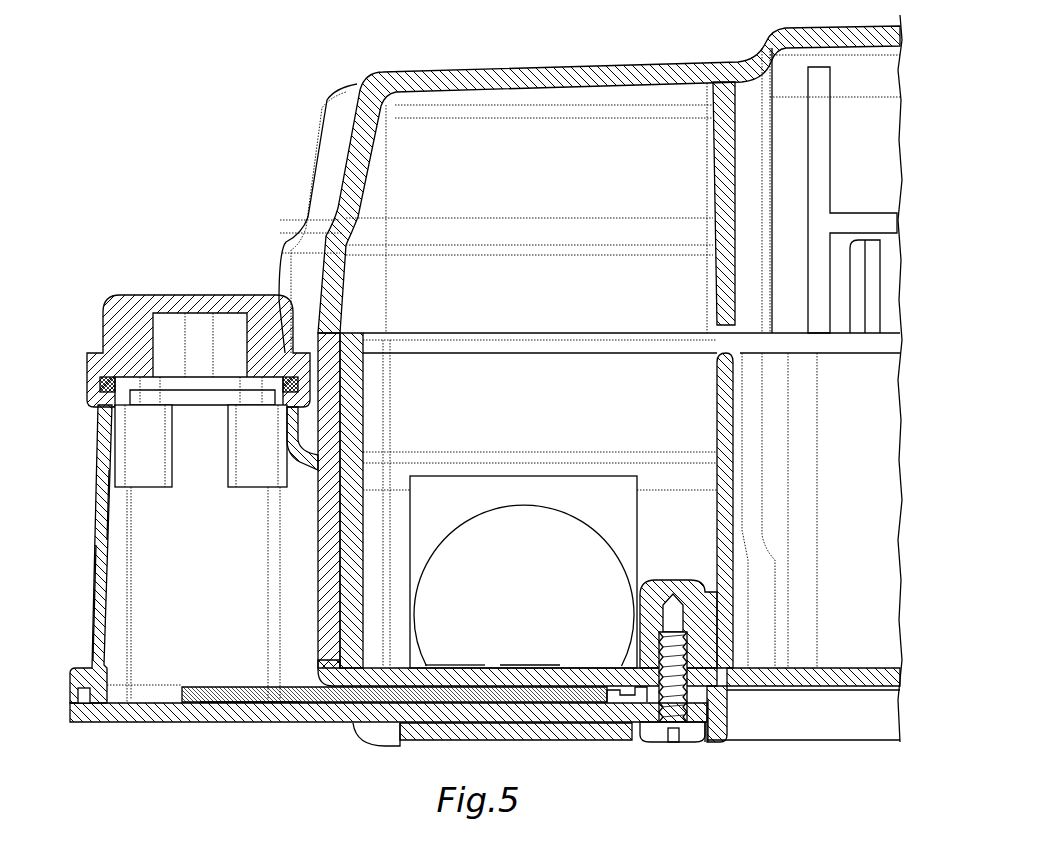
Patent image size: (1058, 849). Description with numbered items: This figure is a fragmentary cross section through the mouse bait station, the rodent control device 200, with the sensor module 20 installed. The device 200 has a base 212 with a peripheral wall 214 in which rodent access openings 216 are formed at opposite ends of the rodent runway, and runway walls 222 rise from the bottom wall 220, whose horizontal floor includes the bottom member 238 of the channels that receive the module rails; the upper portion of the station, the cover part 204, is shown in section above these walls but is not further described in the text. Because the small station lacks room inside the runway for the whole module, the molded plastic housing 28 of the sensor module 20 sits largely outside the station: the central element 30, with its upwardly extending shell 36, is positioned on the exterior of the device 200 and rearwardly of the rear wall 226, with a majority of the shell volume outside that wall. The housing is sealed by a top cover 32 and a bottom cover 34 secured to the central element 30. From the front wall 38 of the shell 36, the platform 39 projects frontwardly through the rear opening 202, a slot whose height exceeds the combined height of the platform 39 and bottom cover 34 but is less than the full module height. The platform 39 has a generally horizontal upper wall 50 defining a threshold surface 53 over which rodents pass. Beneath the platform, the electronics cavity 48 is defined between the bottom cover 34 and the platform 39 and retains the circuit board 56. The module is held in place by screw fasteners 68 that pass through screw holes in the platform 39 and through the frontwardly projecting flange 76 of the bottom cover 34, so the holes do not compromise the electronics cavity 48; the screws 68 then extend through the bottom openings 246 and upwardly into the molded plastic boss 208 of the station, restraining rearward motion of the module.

The rodent control device 200 is at (280, 100).
The housing cover 204 is at (389, 70).
The top cover 32 is at (103, 312).
The sensor module 20 is at (98, 460).
The molded plastic housing 28 is at (96, 507).
The central element 30 is at (93, 560).
The shell 36 is at (110, 620).
The front wall 38 is at (318, 530).
The rear wall 226 is at (318, 575).
The circuit board 56 is at (207, 686).
The bottom cover 34 is at (88, 723).
The electronics cavity 48 is at (245, 690).
The base 212 is at (447, 332).
The peripheral wall 214 is at (529, 401).
The rodent access openings 216 is at (498, 512).
The rear opening 202 is at (383, 663).
The boss 208 is at (653, 580).
The platform 39 is at (440, 663).
The upper wall 50 is at (465, 663).
The threshold surface 53 is at (530, 663).
The runway walls 222 is at (737, 416).
The bottom wall 220 is at (437, 742).
The bottom member 238 is at (568, 723).
The screw fasteners 68 is at (662, 742).
The bottom openings 246 is at (710, 742).
The flange 76 is at (728, 712).